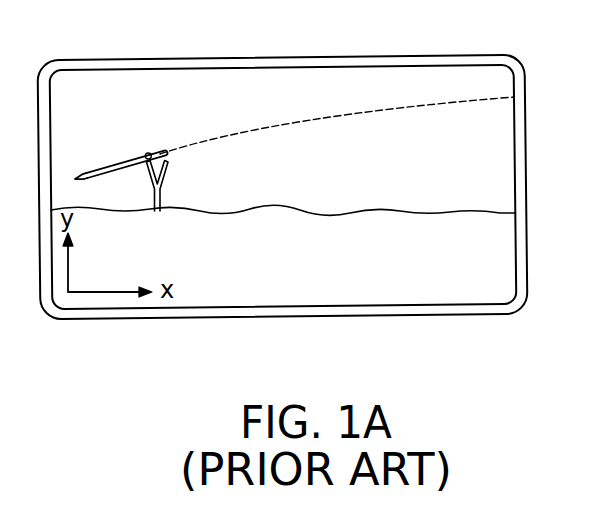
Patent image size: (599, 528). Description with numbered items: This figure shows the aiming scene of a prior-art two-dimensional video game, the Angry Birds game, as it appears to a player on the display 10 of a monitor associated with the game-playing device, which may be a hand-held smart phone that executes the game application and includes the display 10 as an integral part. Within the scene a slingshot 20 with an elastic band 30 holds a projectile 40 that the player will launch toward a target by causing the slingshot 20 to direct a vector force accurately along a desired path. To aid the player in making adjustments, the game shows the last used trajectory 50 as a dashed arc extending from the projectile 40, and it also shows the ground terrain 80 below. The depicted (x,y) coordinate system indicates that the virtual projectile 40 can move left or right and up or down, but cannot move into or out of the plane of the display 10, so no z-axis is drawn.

The display 10 is at (206, 84).
The slingshot 20 is at (166, 188).
The elastic band 30 is at (103, 172).
The projectile 40 is at (84, 176).
The last used trajectory 50 is at (336, 116).
The ground terrain 80 is at (301, 208).